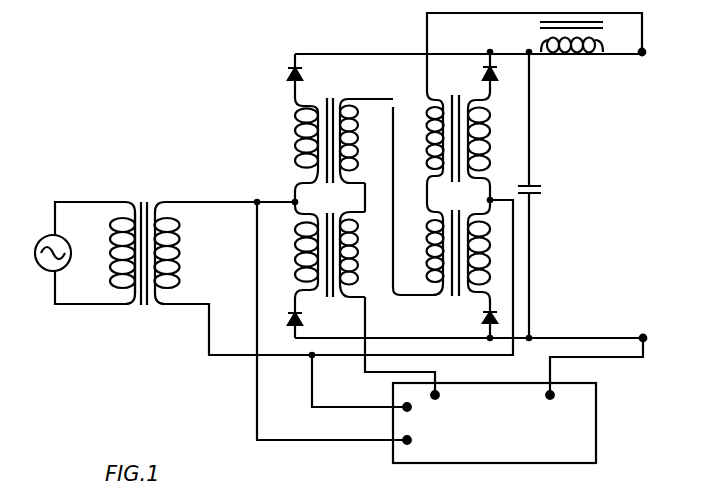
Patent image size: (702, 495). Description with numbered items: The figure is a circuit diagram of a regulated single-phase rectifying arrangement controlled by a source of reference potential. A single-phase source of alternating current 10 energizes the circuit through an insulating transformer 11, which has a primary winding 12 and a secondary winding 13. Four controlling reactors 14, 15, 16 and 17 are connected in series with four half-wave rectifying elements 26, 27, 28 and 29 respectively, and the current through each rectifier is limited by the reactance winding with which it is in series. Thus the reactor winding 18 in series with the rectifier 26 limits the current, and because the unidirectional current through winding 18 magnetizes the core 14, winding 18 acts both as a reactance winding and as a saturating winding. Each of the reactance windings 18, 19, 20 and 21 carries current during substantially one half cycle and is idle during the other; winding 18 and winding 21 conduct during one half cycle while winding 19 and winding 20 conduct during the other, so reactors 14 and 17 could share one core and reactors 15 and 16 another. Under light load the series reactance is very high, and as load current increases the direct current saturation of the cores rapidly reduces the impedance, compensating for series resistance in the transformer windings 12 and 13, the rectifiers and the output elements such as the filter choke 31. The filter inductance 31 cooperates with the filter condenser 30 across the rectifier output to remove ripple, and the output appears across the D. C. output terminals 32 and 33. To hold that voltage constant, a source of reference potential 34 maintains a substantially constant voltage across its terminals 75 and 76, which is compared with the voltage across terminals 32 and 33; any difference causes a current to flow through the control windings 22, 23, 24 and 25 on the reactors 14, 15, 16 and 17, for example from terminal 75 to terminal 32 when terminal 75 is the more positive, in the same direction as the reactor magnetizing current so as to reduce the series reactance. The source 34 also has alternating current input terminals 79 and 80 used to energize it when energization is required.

The single-phase source of alternating current 10 is at (64, 253).
The insulating transformer 11 is at (148, 197).
The primary winding 12 is at (118, 291).
The secondary winding 13 is at (177, 280).
The controlling reactor 14 is at (333, 99).
The controlling reactor 15 is at (333, 298).
The controlling reactor 16 is at (459, 96).
The controlling reactor 17 is at (458, 297).
The reactor winding 18 is at (296, 147).
The reactance winding 19 is at (296, 270).
The reactance winding 20 is at (490, 146).
The reactance winding 21 is at (490, 258).
The control winding 22 is at (358, 155).
The control winding 23 is at (360, 252).
The control winding 24 is at (428, 148).
The control winding 25 is at (428, 256).
The half-wave rectifying element 26 is at (292, 78).
The half-wave rectifying element 27 is at (290, 326).
The half-wave rectifying element 28 is at (494, 72).
The half-wave rectifying element 29 is at (486, 332).
The filter condenser 30 is at (543, 190).
The filter choke 31 is at (561, 53).
The D. C. output terminal 32 is at (640, 56).
The D. C. output terminal 33 is at (640, 334).
The source of reference potential 34 is at (592, 452).
The terminal of the source of reference potential 75 is at (438, 393).
The terminal of the source of reference potential 76 is at (553, 393).
The alternating current input terminal 79 is at (404, 406).
The alternating current input terminal 80 is at (404, 439).